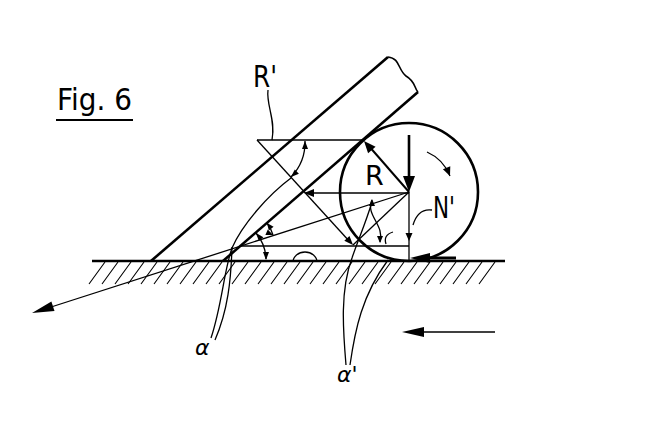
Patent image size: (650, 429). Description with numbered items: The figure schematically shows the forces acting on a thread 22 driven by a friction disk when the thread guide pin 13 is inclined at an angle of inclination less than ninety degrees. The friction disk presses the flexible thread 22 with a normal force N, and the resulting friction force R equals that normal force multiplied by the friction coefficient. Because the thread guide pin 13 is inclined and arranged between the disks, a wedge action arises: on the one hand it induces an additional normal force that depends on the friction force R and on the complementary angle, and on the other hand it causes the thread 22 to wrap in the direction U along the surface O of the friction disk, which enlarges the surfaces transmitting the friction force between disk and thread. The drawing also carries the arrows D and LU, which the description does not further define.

The thread guide pin 13 is at (377, 93).
The thread 22 is at (476, 204).
The normal force N is at (415, 145).
The wrapping direction U is at (82, 300).
The direction of rotation D is at (462, 146).
The friction force R is at (443, 258).
The direction of travel LU is at (467, 332).
The surface of the friction disk O is at (313, 262).